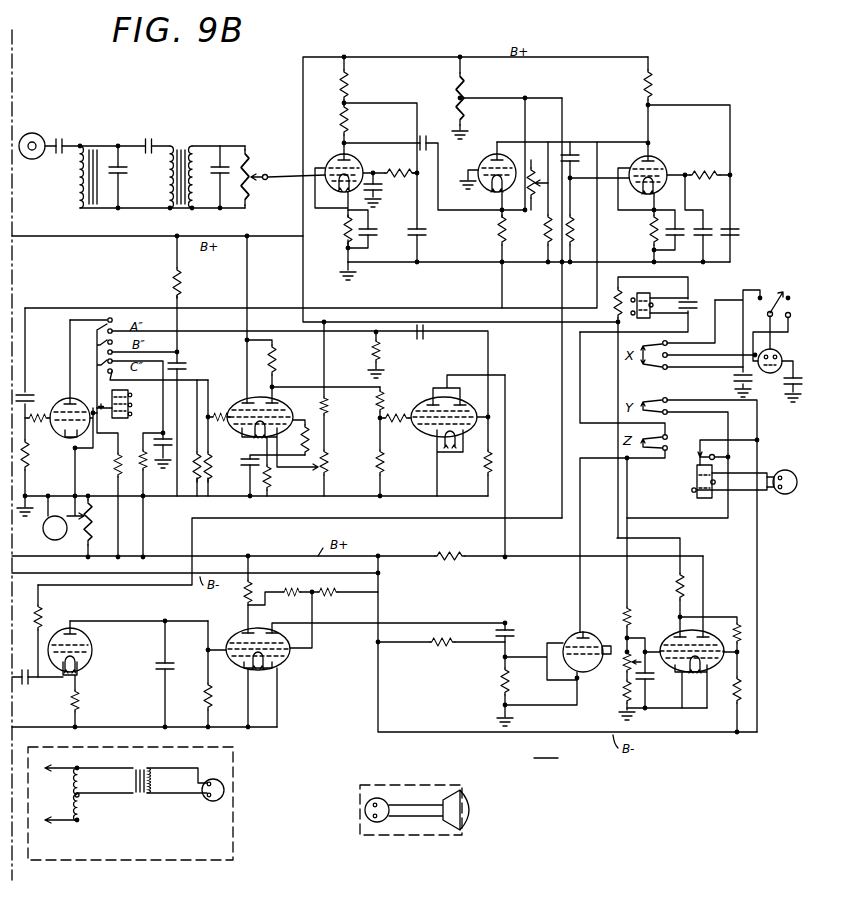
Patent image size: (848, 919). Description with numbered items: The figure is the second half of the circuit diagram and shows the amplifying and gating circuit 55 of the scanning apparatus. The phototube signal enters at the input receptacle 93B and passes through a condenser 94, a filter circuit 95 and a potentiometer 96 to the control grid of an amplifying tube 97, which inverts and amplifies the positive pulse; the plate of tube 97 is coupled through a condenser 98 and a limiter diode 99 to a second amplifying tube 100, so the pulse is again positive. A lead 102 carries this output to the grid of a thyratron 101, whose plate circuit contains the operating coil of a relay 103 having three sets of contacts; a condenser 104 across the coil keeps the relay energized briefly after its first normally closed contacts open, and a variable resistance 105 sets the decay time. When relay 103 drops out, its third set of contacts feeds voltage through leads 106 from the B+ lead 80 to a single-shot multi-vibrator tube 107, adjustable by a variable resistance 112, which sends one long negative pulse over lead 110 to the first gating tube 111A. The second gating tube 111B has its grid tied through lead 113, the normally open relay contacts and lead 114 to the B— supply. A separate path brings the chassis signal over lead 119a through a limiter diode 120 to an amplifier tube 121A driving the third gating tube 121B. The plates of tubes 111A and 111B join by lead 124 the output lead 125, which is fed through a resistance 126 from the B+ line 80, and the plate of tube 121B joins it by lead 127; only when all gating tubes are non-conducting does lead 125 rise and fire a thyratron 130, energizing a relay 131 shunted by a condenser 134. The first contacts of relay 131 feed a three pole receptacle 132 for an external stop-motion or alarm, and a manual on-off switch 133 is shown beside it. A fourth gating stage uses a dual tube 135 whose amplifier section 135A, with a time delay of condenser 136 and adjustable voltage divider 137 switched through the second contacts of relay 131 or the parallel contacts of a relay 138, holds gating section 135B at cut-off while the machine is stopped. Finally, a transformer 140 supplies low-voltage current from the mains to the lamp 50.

The lamp 50 is at (470, 797).
The amplifying and gating circuit 55 is at (416, 748).
The B+ supply lead 80 is at (112, 238).
The input receptacle 93B is at (34, 133).
The condenser 94 is at (64, 145).
The filter circuit 95 is at (155, 143).
The potentiometer 96 is at (260, 172).
The amplifying tube 97 is at (331, 157).
The condenser 98 is at (430, 139).
The limiter diode 99 is at (493, 153).
The second amplifying tube 100 is at (659, 154).
The thyratron 101 is at (61, 398).
The lead 102 is at (381, 307).
The relay 103 is at (129, 413).
The condenser 104 is at (97, 400).
The variable resistance 105 is at (87, 543).
The leads 106 is at (181, 300).
The single-shot multi-vibrator tube 107 is at (243, 401).
The lead 110 is at (362, 375).
The first gating tube 111A is at (428, 375).
The second gating tube 111B is at (474, 408).
The variable resistance 112 is at (329, 468).
The lead 113 is at (489, 353).
The lead 114 is at (145, 531).
The lead 119a is at (30, 683).
The limiter diode 120 is at (93, 650).
The amplifier tube 121A is at (230, 628).
The third gating tube 121B is at (290, 665).
The lead 124 is at (509, 480).
The output lead 125 is at (563, 537).
The resistance 126 is at (454, 538).
The lead 127 is at (420, 622).
The thyratron 130 is at (567, 631).
The relay 131 is at (642, 300).
The three pole receptacle 132 is at (767, 373).
The on-off switch 133 is at (792, 264).
The condenser 134 is at (723, 281).
The dual tube 135 is at (674, 673).
The amplifier section 135A is at (661, 635).
The gating tube section 135B is at (708, 631).
The condenser 136 is at (626, 676).
The adjustable voltage divider 137 is at (625, 694).
The relay 138 is at (698, 498).
The transformer 140 is at (83, 802).